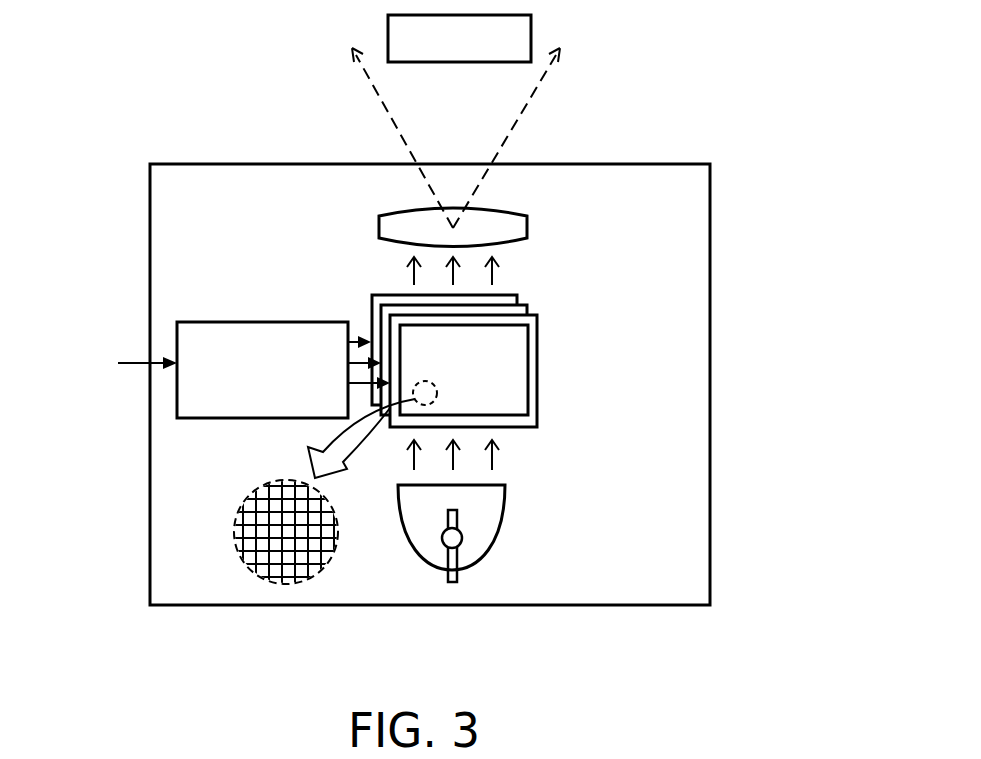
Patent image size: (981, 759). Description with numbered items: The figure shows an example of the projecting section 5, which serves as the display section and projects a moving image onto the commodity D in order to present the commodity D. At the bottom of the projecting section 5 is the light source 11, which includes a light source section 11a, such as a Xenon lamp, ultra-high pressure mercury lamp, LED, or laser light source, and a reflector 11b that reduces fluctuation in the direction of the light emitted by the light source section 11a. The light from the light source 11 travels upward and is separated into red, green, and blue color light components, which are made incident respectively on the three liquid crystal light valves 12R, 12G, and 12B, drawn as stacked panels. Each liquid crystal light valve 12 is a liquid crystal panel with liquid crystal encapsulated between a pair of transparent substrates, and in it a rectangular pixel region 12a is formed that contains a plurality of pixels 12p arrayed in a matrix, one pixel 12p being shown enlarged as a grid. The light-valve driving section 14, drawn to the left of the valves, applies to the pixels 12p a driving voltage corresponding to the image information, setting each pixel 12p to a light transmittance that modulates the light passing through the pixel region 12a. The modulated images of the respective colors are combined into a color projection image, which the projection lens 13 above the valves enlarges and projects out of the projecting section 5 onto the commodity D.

The projecting section 5 is at (188, 164).
The commodity D is at (531, 32).
The projection lens 13 is at (517, 228).
The liquid crystal light valve 12 is at (532, 350).
The liquid crystal light valve for blue 12B is at (517, 300).
The liquid crystal light valve for green 12G is at (527, 312).
The liquid crystal light valve for red 12R is at (537, 352).
The pixel region 12a is at (512, 388).
The pixel 12p is at (274, 494).
The light-valve driving section 14 is at (297, 321).
The light source 11 is at (503, 508).
The light source section 11a is at (462, 538).
The reflector 11b is at (412, 548).